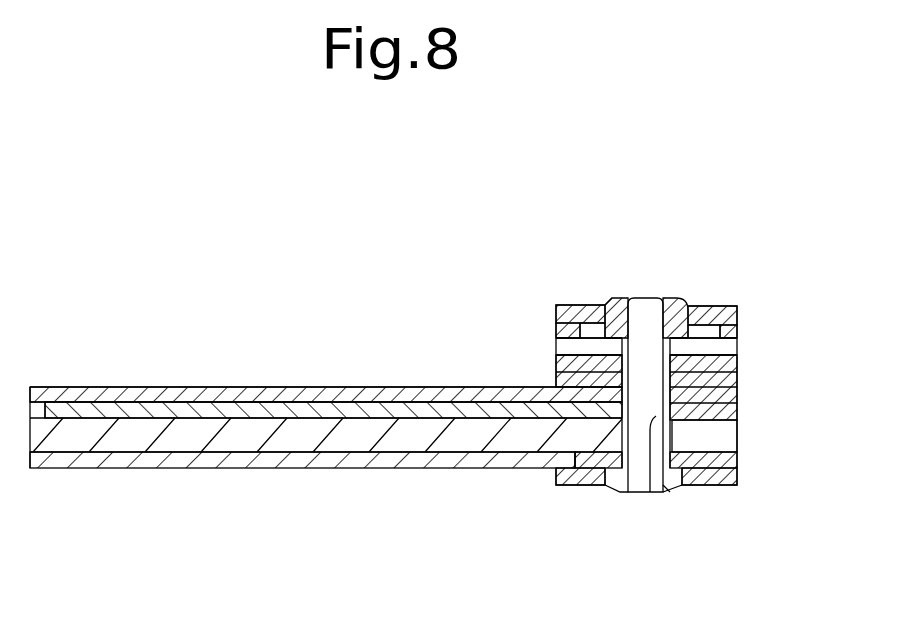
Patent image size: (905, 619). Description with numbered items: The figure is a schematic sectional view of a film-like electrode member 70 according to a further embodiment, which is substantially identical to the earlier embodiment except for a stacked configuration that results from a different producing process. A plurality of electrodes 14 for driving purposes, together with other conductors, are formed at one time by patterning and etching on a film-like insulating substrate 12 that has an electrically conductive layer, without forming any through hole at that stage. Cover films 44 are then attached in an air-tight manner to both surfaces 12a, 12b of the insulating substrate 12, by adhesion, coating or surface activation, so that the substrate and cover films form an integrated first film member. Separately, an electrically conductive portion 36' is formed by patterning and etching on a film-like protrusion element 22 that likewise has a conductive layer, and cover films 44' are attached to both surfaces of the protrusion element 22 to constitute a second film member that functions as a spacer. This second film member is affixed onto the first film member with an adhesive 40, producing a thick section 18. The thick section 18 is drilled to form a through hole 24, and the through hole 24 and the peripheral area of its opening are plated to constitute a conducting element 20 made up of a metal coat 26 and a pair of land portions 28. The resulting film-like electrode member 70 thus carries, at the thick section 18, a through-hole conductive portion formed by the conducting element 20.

The insulating substrate 12 is at (185, 440).
The surface of the insulating substrate 12a is at (78, 390).
The surface of the insulating substrate 12b is at (63, 455).
The electrode 14 is at (268, 407).
The thick section 18 is at (737, 413).
The conducting element 20 is at (613, 298).
The protrusion element 22 is at (737, 343).
The through hole 24 is at (643, 350).
The metal coat 26 is at (650, 493).
The land portion 28 is at (672, 493).
The electrically conductive portion 36' is at (713, 351).
The adhesive 40 is at (555, 380).
The cover film 44 is at (333, 429).
The cover film 44' is at (692, 334).
The film-like electrode member 70 is at (295, 502).